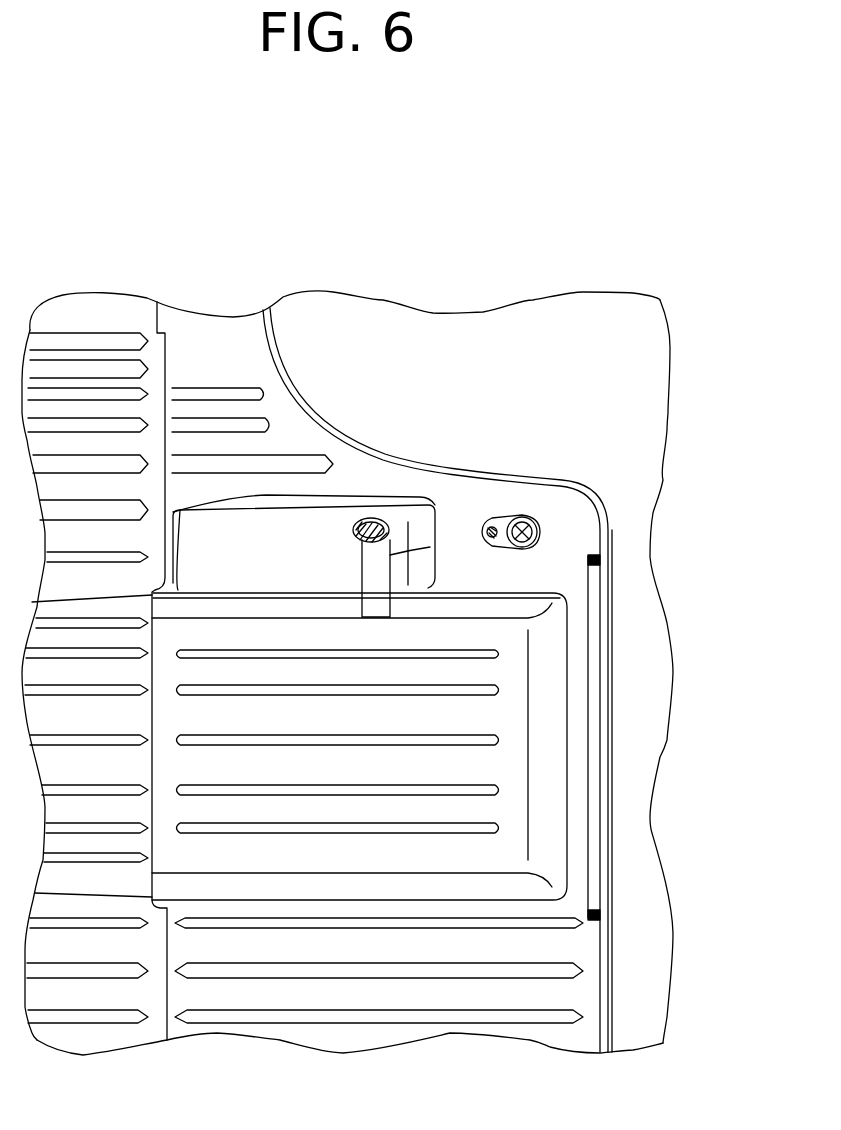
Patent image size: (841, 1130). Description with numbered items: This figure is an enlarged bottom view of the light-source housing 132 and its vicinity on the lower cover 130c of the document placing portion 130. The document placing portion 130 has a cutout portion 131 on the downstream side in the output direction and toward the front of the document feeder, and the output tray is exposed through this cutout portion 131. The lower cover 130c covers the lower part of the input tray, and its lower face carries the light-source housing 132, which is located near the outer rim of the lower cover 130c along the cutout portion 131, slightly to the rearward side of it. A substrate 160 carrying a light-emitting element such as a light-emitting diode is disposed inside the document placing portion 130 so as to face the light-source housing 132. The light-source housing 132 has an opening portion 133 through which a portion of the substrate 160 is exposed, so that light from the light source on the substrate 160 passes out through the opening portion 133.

The document placing portion 130 is at (363, 470).
The lower cover 130c is at (562, 538).
The cutout portion 131 is at (523, 478).
The light-source housing 132 is at (302, 530).
The opening portion 133 is at (375, 522).
The substrate 160 is at (432, 546).